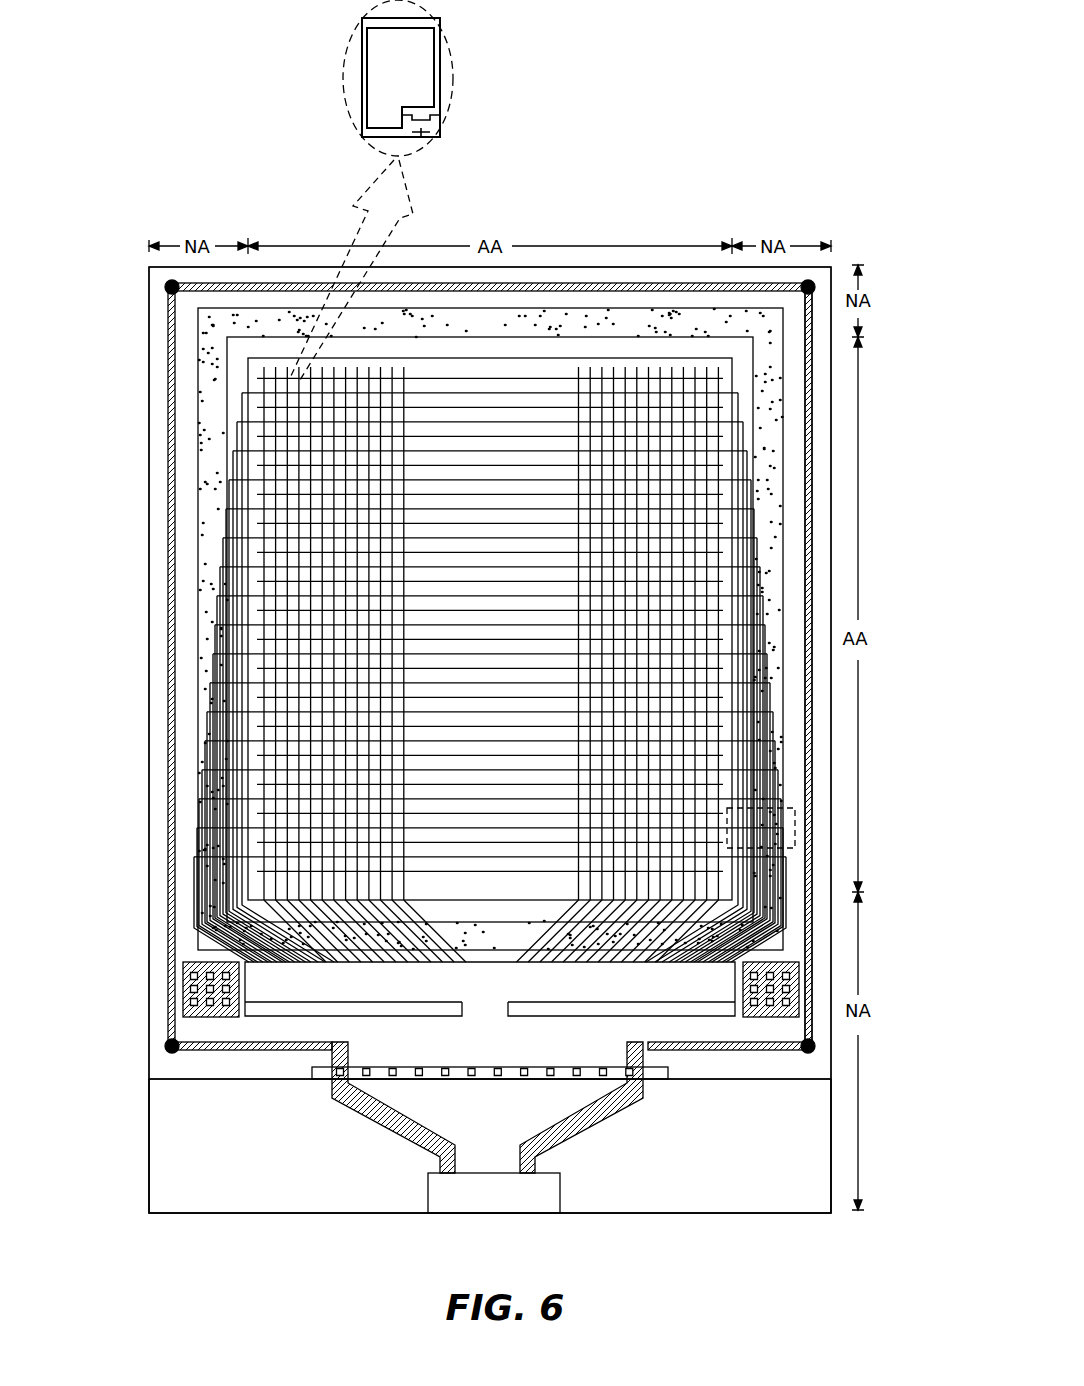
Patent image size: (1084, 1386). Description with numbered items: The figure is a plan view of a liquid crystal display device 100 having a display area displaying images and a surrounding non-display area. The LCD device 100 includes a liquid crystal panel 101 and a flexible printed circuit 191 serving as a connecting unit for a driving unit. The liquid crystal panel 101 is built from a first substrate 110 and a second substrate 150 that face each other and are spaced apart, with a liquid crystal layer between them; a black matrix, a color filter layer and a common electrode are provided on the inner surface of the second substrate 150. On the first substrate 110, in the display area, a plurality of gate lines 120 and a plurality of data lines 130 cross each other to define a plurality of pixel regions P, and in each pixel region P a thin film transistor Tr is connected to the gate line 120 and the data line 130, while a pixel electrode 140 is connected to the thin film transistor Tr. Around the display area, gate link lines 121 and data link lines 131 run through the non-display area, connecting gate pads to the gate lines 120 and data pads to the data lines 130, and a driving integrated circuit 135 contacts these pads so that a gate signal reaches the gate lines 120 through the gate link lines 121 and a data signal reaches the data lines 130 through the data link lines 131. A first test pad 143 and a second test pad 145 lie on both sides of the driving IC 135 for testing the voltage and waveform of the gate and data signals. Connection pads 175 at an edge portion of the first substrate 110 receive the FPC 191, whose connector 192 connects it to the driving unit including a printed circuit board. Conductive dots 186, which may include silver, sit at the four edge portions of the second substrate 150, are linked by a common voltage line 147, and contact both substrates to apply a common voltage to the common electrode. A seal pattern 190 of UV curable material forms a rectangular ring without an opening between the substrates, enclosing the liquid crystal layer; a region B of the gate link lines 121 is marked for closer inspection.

The liquid crystal display device 100 is at (795, 208).
The liquid crystal panel 101 is at (800, 1062).
The first substrate 110 is at (832, 610).
The gate lines 120 is at (530, 857).
The gate link lines 121 is at (778, 767).
The data lines 130 is at (706, 559).
The data link lines 131 is at (630, 942).
The driving integrated circuit 135 is at (480, 988).
The pixel electrode 140 is at (464, 96).
The first test pad 143 is at (182, 990).
The second test pad 145 is at (800, 985).
The common voltage line 147 is at (815, 707).
The second substrate 150 is at (812, 582).
The connection pads 175 is at (491, 1081).
The conductive dots 186 is at (812, 283).
The seal pattern 190 is at (787, 440).
The flexible printed circuit 191 is at (758, 1190).
The connector 192 is at (505, 1214).
The pixel region P is at (413, 70).
The thin film transistor Tr is at (447, 145).
The region B is at (795, 830).